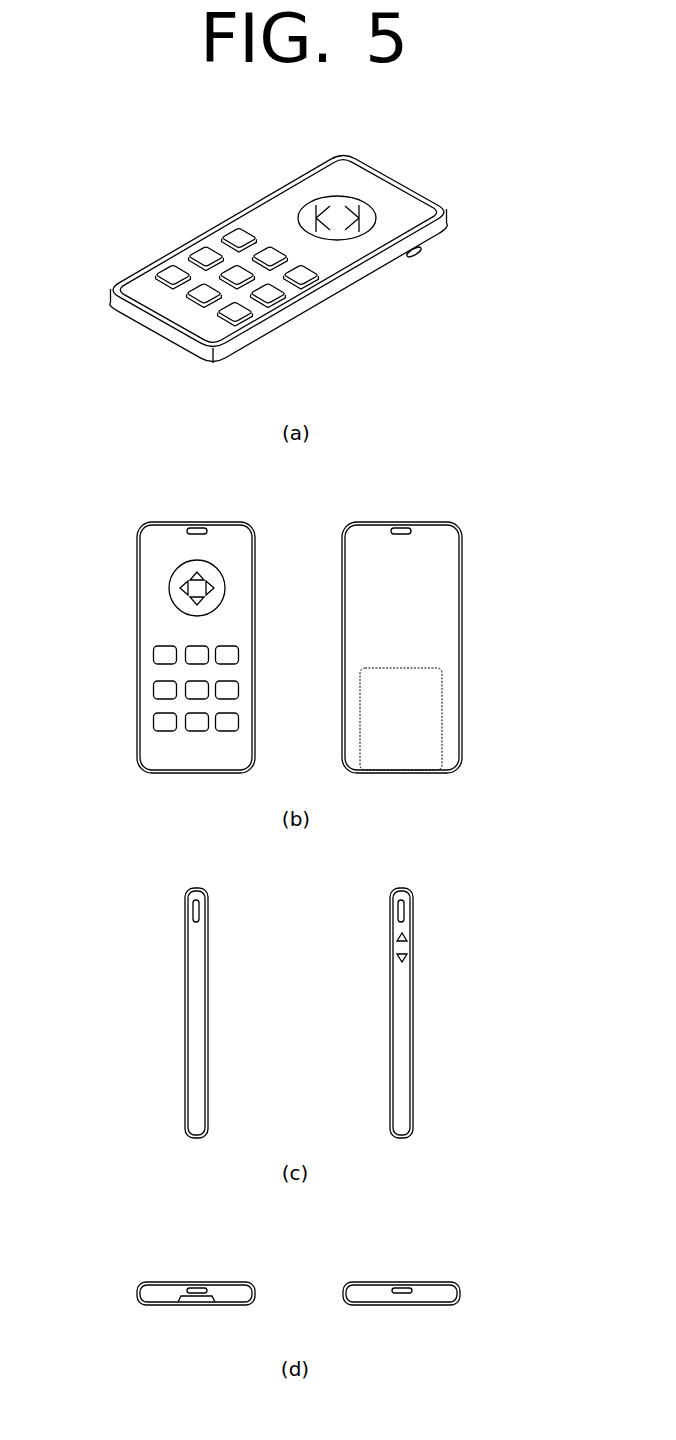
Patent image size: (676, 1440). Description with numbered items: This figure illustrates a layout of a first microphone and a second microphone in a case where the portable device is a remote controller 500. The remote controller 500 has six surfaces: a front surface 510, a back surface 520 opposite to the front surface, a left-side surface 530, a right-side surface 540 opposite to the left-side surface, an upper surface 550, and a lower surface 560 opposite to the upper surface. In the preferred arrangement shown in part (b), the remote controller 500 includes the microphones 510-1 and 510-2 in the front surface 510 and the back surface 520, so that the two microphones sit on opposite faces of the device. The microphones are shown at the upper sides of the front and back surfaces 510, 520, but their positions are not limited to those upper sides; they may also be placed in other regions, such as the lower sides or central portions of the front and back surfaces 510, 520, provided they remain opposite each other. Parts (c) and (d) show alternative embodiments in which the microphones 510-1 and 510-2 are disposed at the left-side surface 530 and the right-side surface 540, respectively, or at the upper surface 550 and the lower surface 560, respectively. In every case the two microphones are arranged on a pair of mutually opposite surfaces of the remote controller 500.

The remote controller 500 is at (369, 163).
The front surface 510 is at (283, 190).
The back surface 520 is at (313, 320).
The left-side surface 530 is at (223, 217).
The right-side surface 540 is at (380, 277).
The upper surface 550 is at (405, 180).
The lower surface 560 is at (155, 330).
The first microphone 510-1 is at (193, 523).
The second microphone 510-2 is at (398, 523).